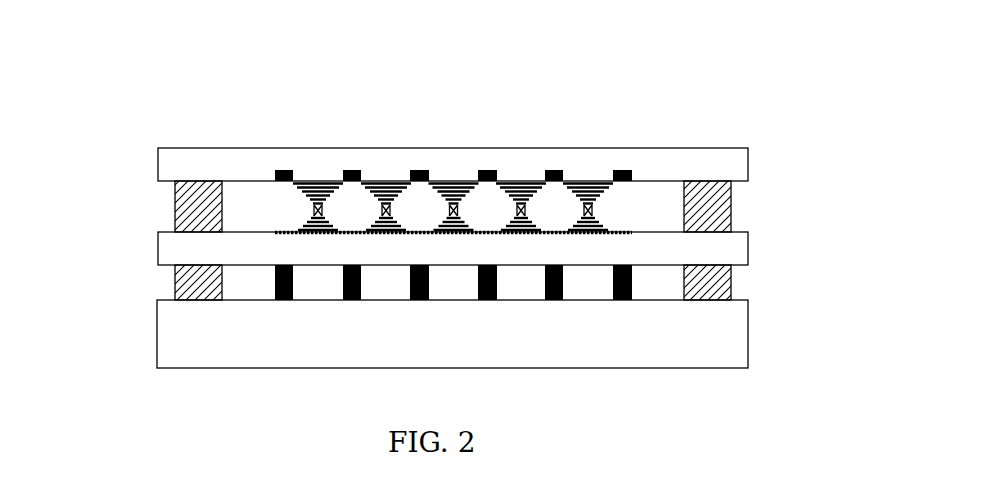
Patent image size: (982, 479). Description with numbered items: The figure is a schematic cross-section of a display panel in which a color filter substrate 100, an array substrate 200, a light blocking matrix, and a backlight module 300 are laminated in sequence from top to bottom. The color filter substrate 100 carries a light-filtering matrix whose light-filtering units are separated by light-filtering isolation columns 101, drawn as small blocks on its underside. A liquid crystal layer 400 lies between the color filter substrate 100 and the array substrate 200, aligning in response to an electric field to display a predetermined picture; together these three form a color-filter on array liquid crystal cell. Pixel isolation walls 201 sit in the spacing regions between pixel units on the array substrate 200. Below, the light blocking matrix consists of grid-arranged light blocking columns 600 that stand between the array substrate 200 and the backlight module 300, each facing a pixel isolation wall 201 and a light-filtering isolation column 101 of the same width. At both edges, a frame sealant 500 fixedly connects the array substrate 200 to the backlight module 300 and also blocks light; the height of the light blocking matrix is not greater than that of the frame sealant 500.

The color filter substrate 100 is at (748, 150).
The light-filtering isolation column 101 is at (553, 170).
The array substrate 200 is at (748, 240).
The pixel isolation wall 201 is at (283, 232).
The backlight module 300 is at (748, 327).
The liquid crystal layer 400 is at (318, 183).
The frame sealant 500 is at (175, 285).
The light blocking column 600 is at (277, 300).